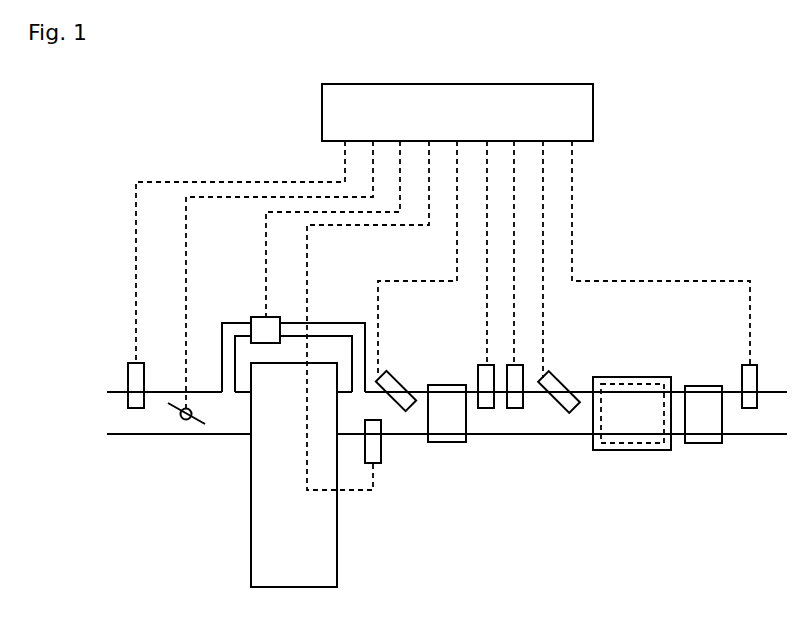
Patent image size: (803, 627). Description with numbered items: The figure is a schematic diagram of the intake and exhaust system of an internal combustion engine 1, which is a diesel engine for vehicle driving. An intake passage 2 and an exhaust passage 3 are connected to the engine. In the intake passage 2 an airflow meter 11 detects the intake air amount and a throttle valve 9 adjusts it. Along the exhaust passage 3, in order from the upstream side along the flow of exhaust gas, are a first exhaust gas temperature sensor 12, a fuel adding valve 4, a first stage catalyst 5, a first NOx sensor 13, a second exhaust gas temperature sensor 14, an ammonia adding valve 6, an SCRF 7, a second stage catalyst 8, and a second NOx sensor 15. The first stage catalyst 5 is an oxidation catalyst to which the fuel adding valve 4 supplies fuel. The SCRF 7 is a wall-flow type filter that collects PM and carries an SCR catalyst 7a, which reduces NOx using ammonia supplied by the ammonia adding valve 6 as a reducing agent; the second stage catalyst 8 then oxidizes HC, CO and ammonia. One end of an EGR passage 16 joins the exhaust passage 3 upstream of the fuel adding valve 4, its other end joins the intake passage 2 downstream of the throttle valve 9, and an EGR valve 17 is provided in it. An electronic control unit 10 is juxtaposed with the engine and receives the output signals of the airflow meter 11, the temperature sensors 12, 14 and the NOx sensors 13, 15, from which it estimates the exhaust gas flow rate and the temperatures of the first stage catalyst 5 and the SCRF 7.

The internal combustion engine 1 is at (337, 567).
The intake passage 2 is at (228, 437).
The exhaust passage 3 is at (513, 434).
The fuel adding valve 4 is at (390, 368).
The first stage catalyst 5 is at (448, 442).
The ammonia adding valve 6 is at (560, 375).
The SCRF 7 is at (593, 449).
The SCR catalyst 7a is at (642, 450).
The second stage catalyst 8 is at (703, 443).
The throttle valve 9 is at (182, 430).
The electronic control unit 10 is at (318, 114).
The airflow meter 11 is at (146, 377).
The first exhaust gas temperature sensor 12 is at (381, 450).
The first NOx sensor 13 is at (478, 370).
The second exhaust gas temperature sensor 14 is at (527, 408).
The second NOx sensor 15 is at (740, 370).
The EGR passage 16 is at (330, 322).
The EGR valve 17 is at (253, 318).